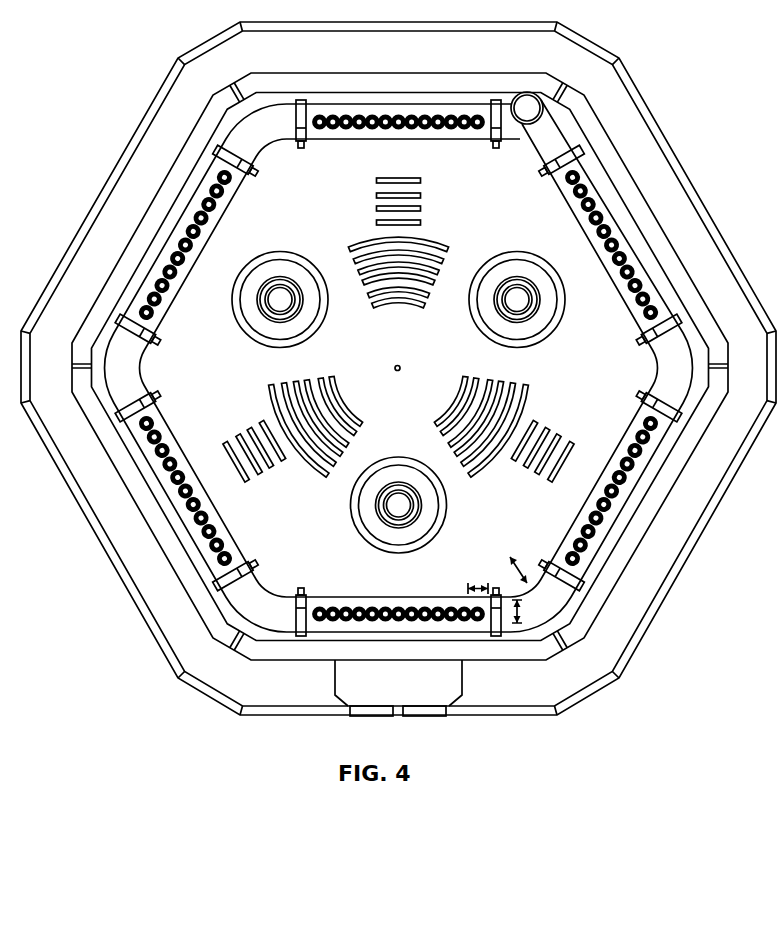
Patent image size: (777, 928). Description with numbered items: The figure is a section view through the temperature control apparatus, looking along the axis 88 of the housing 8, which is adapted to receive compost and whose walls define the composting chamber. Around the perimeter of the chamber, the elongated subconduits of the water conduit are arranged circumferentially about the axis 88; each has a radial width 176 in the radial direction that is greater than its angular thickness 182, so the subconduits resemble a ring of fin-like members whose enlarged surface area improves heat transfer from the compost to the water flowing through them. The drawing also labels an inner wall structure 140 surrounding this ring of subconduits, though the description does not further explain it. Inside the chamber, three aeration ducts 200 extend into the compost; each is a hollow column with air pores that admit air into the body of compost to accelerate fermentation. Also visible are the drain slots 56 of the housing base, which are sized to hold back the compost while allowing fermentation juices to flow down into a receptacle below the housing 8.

The housing 8 is at (660, 227).
The inner housing wall 140 is at (403, 98).
The radial width 176 is at (513, 611).
The angular thickness 182 is at (472, 586).
The aeration duct 200 is at (290, 252).
The drain slots 56 is at (372, 238).
The axis 88 is at (404, 366).